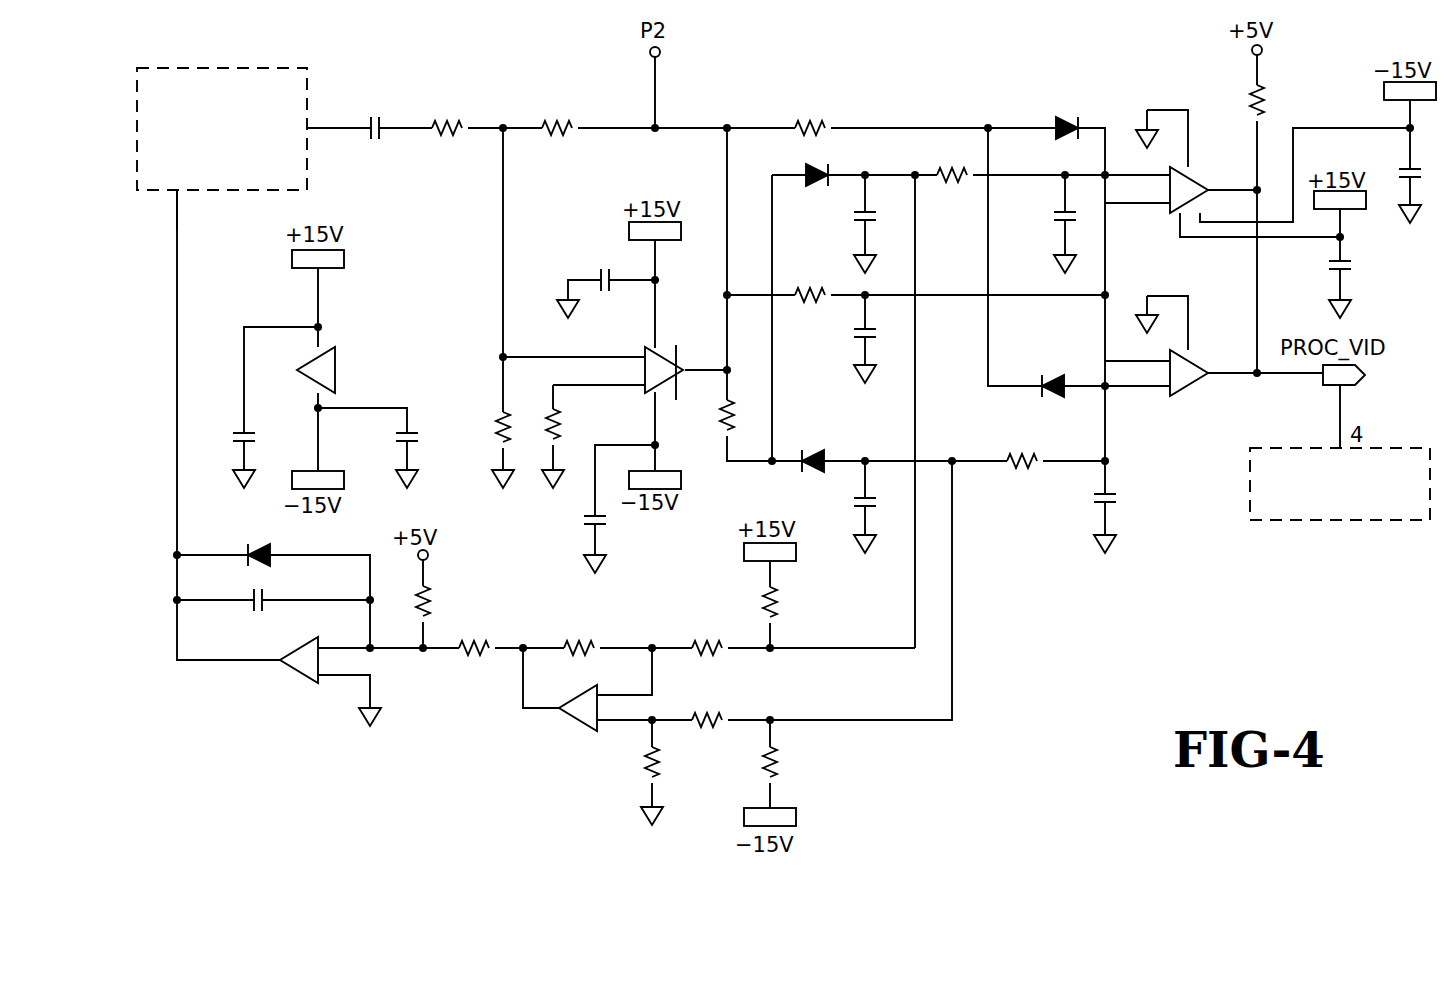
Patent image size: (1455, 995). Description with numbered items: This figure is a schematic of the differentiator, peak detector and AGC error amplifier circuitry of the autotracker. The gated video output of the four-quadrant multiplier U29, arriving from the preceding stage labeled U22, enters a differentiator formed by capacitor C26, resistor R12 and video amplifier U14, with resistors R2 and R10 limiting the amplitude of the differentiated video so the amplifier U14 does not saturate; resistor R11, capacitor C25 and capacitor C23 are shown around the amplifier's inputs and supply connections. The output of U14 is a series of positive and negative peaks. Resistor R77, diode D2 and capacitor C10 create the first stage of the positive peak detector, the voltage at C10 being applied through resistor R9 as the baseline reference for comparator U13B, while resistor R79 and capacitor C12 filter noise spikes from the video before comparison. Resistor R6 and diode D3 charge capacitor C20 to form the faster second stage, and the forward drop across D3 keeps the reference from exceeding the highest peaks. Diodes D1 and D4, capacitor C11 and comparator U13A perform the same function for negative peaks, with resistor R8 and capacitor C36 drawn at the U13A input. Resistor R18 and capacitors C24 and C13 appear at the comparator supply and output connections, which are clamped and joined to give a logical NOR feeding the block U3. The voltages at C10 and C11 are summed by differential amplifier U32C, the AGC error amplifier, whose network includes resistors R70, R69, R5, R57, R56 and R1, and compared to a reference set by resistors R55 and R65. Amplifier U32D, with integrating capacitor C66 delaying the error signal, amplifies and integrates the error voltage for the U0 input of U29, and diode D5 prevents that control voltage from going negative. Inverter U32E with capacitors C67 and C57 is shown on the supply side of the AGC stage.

The U22 output from FIG-3 U22 is at (222, 129).
The four-quadrant multiplier U29 is at (201, 193).
The U3 see FIG-6 U3 is at (1340, 484).
The capacitor C26 is at (378, 132).
The resistor R2 is at (448, 132).
The resistor R12 is at (557, 133).
The resistor R6 is at (834, 128).
The diode D3 is at (1063, 116).
The diode D2 is at (799, 169).
The resistor R9 is at (954, 178).
The capacitor C10 is at (840, 225).
The capacitor C20 is at (1036, 225).
The comparator U13B is at (1159, 205).
The resistor 1K R18 is at (1282, 100).
The capacitor 0.1uf C24 is at (1402, 157).
The capacitor 0.1uf C13 is at (1310, 276).
The resistor R79 is at (812, 296).
The capacitor C12 is at (832, 356).
The video amplifier U14 is at (636, 360).
The capacitor 0.1uf C25 is at (595, 288).
The resistor R10 is at (480, 415).
The resistor 1.6K R11 is at (580, 413).
The resistor R77 is at (701, 431).
The capacitor 0.1uf C23 is at (563, 534).
The diode D1 is at (815, 447).
The capacitor C11 is at (841, 512).
The diode D4 is at (1060, 373).
The comparator U13A is at (1205, 383).
The resistor 10K R8 is at (1028, 464).
The capacitor 470pf C36 is at (1137, 510).
The capacitor 0.1uf C67 is at (219, 438).
The inverter U32E is at (348, 370).
The capacitor 0.1uf C57 is at (381, 449).
The diode D5 is at (277, 547).
The integrating capacitor C66 is at (232, 601).
The amplifier U32D is at (273, 669).
The resistor R55 is at (455, 598).
The resistor R65 is at (482, 676).
The resistor 560K R70 is at (566, 650).
The resistor R69 is at (712, 650).
The resistor R5 is at (804, 604).
The differential amplifier U32C is at (559, 719).
The resistor 33K R57 is at (710, 722).
The resistor 82K R56 is at (677, 781).
The resistor 2Meg R1 is at (804, 774).